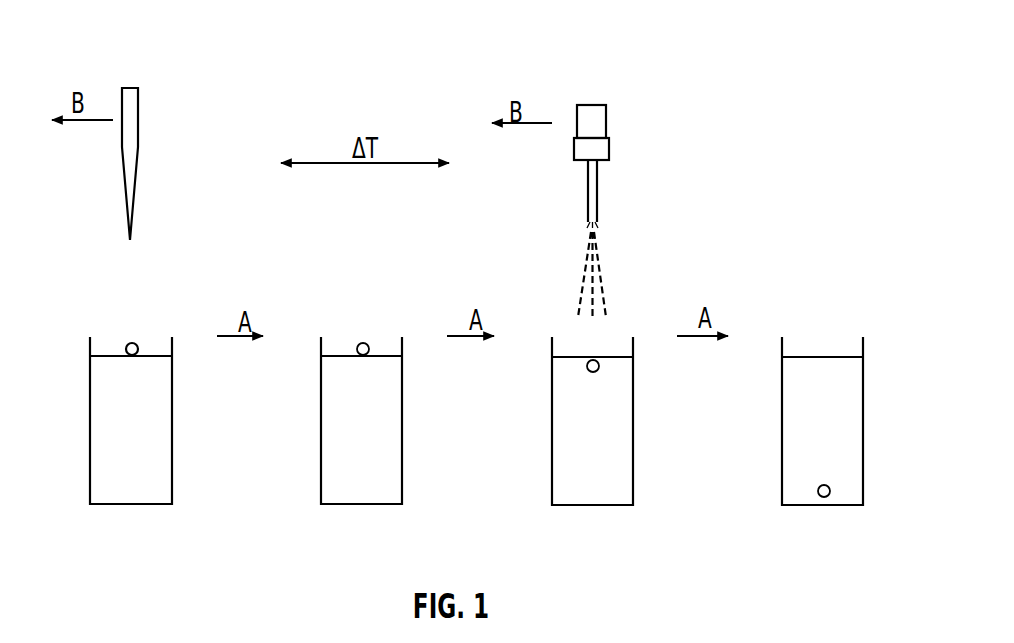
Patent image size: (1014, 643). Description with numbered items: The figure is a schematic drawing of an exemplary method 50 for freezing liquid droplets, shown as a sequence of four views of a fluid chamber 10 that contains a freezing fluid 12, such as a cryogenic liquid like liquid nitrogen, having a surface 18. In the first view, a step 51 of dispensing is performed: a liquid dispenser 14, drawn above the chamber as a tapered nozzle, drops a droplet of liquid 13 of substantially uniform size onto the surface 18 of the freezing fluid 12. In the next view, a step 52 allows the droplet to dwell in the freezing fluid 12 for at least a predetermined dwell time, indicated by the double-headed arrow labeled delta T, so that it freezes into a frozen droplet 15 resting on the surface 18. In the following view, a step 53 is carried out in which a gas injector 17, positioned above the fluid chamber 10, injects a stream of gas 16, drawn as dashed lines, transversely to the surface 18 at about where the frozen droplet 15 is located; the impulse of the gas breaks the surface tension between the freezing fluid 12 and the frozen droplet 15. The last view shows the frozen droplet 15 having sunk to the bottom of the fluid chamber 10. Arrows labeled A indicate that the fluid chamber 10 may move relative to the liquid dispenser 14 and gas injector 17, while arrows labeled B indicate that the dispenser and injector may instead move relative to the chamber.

The fluid chamber 10 is at (88, 420).
The freezing fluid 12 is at (155, 407).
The droplet of liquid 13 is at (135, 343).
The liquid dispenser 14 is at (130, 153).
The frozen droplet 15 is at (365, 343).
The stream of gas 16 is at (603, 287).
The gas injector 17 is at (598, 150).
The surface 18 is at (117, 355).
The method 50 is at (111, 47).
The step of dispensing 51 is at (82, 283).
The step of allowing the droplet to dwell 52 is at (313, 283).
The step of injecting gas 53 is at (545, 285).